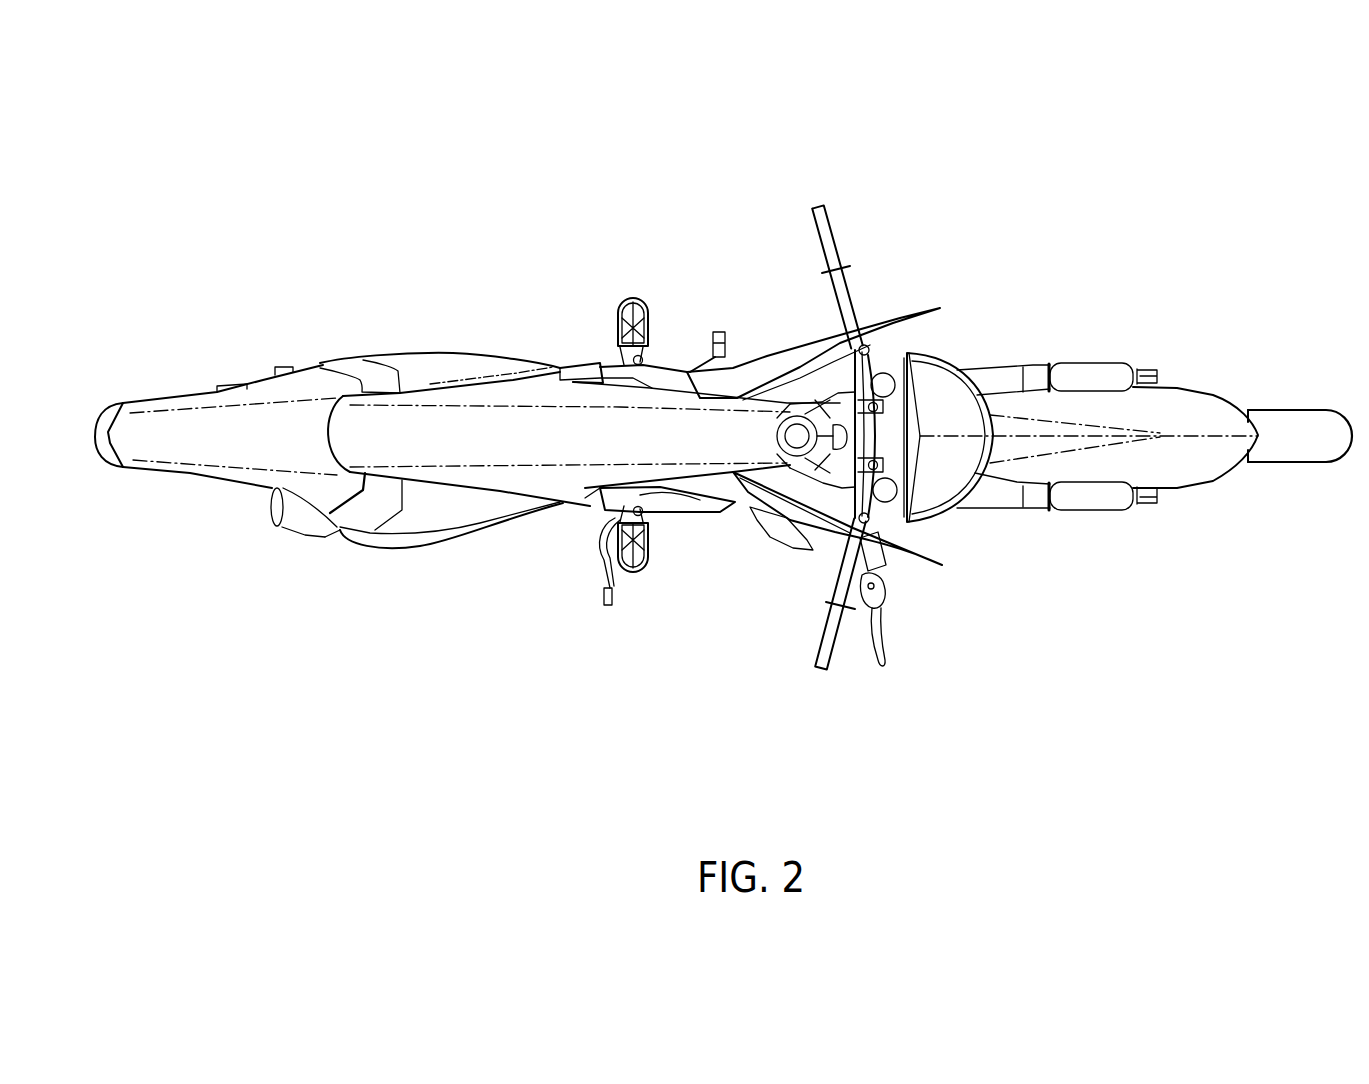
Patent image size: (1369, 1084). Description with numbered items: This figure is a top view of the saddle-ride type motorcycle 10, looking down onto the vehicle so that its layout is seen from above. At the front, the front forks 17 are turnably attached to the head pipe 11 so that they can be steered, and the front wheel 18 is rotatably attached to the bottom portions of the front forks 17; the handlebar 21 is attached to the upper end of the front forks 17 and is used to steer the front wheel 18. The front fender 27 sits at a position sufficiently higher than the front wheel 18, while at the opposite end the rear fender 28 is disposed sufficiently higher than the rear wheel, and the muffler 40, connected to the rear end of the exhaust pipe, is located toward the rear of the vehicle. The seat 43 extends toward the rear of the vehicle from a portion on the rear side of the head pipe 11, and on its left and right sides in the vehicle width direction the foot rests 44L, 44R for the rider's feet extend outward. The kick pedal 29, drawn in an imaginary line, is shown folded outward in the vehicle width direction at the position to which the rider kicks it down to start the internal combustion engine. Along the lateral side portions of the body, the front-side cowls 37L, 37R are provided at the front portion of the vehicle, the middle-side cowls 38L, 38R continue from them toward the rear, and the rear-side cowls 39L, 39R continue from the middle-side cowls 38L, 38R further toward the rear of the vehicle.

The motorcycle 10 is at (1101, 228).
The head pipe 11 is at (800, 414).
The front forks 17 is at (1000, 497).
The front wheel 18 is at (1310, 447).
The handlebar 21 is at (830, 653).
The front fender 27 is at (1183, 413).
The rear fender 28 is at (176, 430).
The kick pedal 29 is at (608, 605).
The front-side cowl 37L is at (747, 380).
The front-side cowl 37R is at (742, 493).
The middle-side cowl 38L is at (585, 368).
The middle-side cowl 38R is at (583, 498).
The rear-side cowl 39L is at (427, 367).
The rear-side cowl 39R is at (450, 528).
The muffler 40 is at (302, 524).
The seat 43 is at (510, 430).
The foot rest 44L is at (634, 299).
The foot rest 44R is at (637, 575).